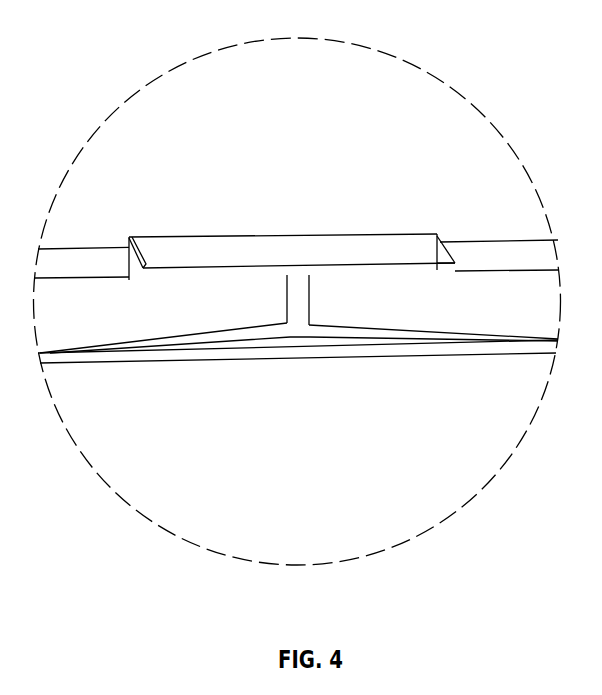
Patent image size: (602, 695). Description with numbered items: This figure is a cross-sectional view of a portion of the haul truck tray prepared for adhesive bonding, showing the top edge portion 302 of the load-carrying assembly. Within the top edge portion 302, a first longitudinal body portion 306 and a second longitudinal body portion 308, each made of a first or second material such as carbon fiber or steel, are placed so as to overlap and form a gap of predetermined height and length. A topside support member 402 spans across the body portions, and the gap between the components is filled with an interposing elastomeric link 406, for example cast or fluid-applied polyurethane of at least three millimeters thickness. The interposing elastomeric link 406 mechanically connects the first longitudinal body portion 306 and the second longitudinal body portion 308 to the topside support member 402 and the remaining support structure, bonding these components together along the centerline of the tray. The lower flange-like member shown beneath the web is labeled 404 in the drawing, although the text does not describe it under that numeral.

The top edge portion 302 is at (441, 585).
The first longitudinal body portion 306 is at (143, 310).
The second longitudinal body portion 308 is at (450, 302).
The topside support member 402 is at (303, 250).
The bottom flange of cross member 404 is at (305, 343).
The interposing elastomeric link 406 is at (297, 302).